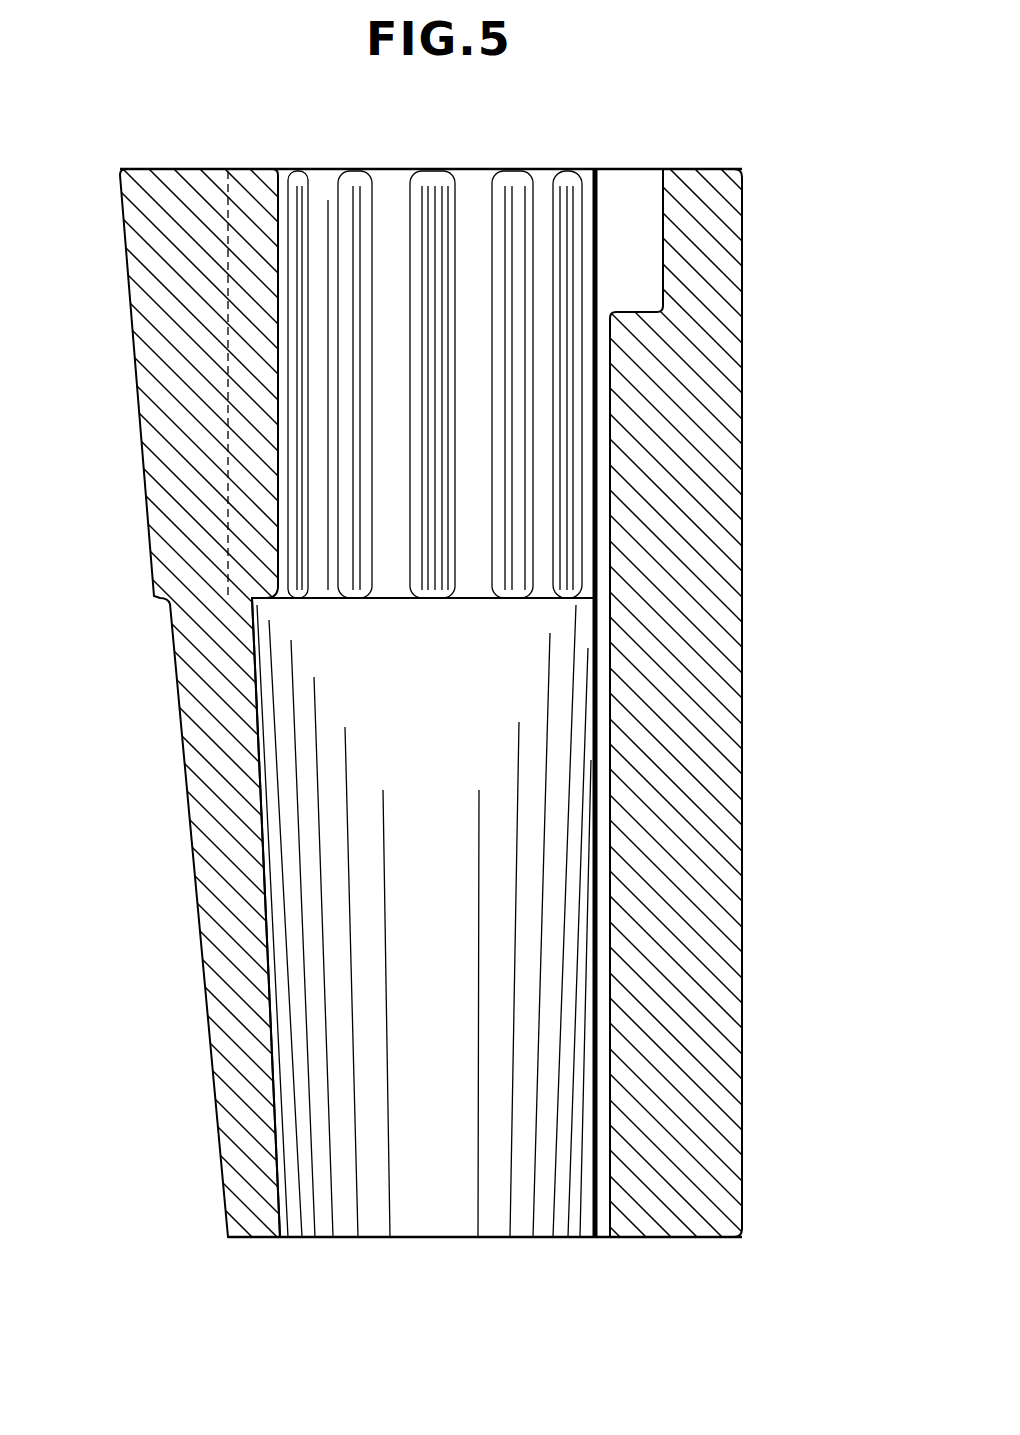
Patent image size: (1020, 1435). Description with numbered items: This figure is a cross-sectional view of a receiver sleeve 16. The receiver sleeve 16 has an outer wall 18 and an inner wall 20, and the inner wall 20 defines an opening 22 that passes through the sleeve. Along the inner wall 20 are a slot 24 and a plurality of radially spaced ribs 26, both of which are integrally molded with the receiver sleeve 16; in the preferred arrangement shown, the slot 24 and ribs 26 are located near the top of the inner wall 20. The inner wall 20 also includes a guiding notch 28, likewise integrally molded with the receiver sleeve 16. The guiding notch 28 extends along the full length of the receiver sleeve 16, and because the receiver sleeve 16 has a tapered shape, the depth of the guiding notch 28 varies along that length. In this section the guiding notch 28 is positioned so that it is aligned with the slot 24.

The receiver sleeve 16 is at (158, 84).
The outer wall 18 is at (134, 367).
The inner wall 20 is at (280, 1237).
The opening 22 is at (437, 1237).
The slot 24 is at (639, 203).
The ribs 26 is at (355, 230).
The guiding notch 28 is at (603, 1220).